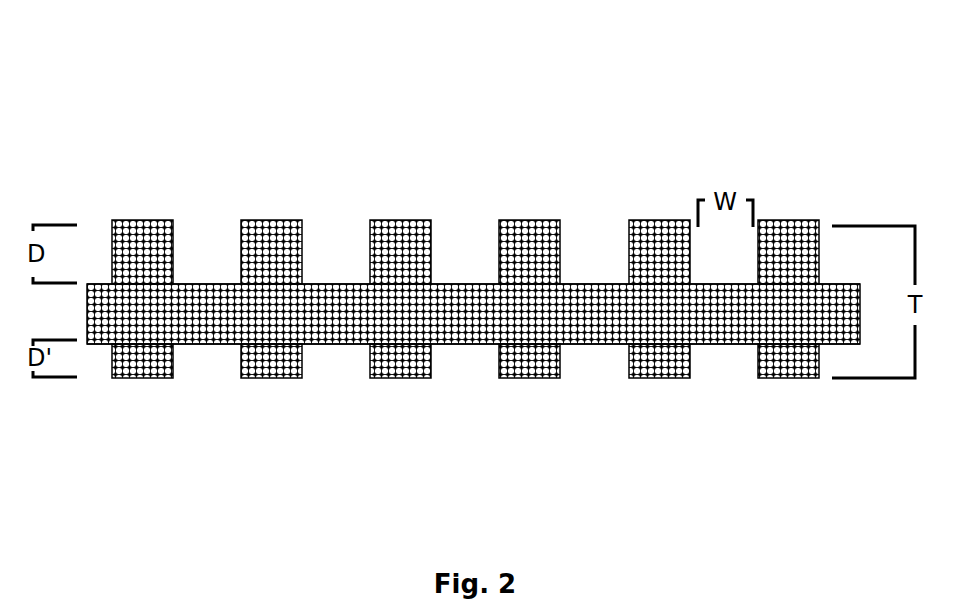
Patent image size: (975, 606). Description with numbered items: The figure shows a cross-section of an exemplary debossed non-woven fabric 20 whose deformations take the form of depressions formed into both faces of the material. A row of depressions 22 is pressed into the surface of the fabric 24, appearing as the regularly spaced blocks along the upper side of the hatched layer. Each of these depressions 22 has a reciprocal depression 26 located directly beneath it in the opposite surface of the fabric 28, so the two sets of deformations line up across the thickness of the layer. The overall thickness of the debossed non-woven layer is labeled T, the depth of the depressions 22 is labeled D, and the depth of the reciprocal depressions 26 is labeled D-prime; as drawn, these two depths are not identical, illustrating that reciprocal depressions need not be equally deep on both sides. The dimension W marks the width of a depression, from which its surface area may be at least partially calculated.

The fabric 20 is at (136, 166).
The depressions 22 is at (202, 233).
The surface of the fabric 24 is at (779, 205).
The reciprocal depressions 26 is at (201, 374).
The opposite surface of the fabric 28 is at (779, 394).